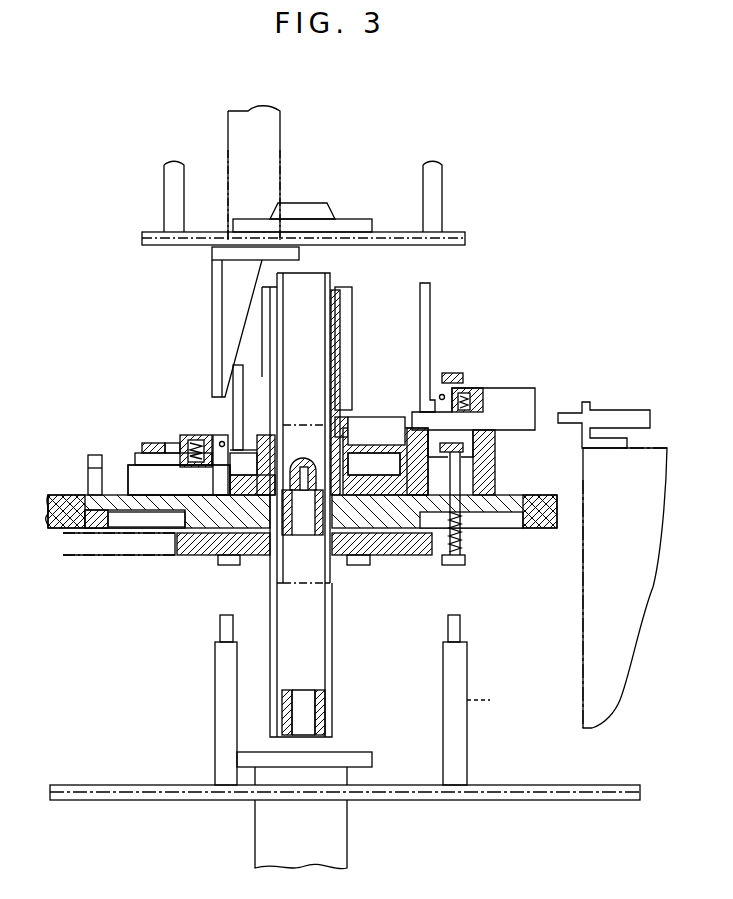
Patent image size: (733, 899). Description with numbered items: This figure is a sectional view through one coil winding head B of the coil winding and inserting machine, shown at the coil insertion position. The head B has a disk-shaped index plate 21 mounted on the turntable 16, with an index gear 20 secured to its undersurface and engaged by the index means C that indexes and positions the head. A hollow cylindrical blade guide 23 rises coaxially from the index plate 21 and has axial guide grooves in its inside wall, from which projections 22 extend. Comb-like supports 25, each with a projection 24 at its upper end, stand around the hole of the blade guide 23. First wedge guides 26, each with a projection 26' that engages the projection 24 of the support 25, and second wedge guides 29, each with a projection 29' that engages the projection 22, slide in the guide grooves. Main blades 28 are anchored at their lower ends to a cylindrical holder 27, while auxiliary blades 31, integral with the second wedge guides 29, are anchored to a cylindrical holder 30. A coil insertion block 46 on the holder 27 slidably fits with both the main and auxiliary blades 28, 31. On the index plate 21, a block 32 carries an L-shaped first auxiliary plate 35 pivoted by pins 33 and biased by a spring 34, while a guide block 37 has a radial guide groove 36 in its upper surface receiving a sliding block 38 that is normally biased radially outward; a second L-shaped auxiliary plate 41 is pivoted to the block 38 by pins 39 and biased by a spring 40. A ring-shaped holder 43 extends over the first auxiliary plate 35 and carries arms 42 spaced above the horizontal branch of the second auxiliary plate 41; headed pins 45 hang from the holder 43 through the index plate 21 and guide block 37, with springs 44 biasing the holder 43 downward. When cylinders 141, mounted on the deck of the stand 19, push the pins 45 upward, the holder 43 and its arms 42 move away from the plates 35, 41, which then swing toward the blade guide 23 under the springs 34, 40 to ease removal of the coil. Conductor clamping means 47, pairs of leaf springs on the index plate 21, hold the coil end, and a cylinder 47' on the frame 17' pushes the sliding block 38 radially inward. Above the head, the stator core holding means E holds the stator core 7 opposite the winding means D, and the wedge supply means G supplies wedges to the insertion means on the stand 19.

The stator core 7 is at (314, 210).
The stator core holding means E is at (142, 243).
The winding means D is at (212, 258).
The projection 24 is at (330, 318).
The main blade 28 is at (325, 356).
The coil insertion block 46 is at (303, 436).
The support 25 is at (352, 355).
The projection 26' is at (315, 392).
The second wedge guide 29 is at (286, 512).
The projection 29' is at (264, 444).
The cylindrical holder 27 is at (302, 536).
The first wedge guide 26 is at (329, 588).
The auxiliary blade 31 is at (282, 709).
The cylindrical holder 30 is at (303, 695).
The auxiliary plate 35 is at (238, 383).
The pin 33 is at (222, 440).
The spring 34 is at (192, 442).
The block 32 is at (128, 480).
The coil winding head B is at (128, 466).
The projection 22 is at (264, 466).
The conductor clamping means 47 is at (74, 475).
The turntable 16 is at (56, 510).
The index plate 21 is at (140, 520).
The index gear 20 is at (196, 546).
The index means C is at (97, 556).
The ring-shaped holder 43 is at (373, 446).
The blade guide 23 is at (350, 463).
The guide block 37 is at (417, 478).
The radial guide groove 36 is at (485, 445).
The spring 44 is at (461, 536).
The pin 45 is at (456, 566).
The sliding block 38 is at (535, 420).
The second auxiliary plate 41 is at (430, 304).
The arm 42 is at (452, 373).
The spring 40 is at (470, 396).
The pin 39 is at (439, 397).
The cylinder 47' is at (604, 408).
The frame 17' is at (630, 588).
The cylinder 141 is at (467, 705).
The stand 19 is at (548, 785).
The wedge supply means G is at (255, 840).